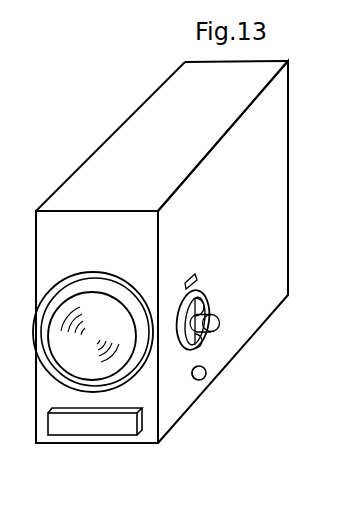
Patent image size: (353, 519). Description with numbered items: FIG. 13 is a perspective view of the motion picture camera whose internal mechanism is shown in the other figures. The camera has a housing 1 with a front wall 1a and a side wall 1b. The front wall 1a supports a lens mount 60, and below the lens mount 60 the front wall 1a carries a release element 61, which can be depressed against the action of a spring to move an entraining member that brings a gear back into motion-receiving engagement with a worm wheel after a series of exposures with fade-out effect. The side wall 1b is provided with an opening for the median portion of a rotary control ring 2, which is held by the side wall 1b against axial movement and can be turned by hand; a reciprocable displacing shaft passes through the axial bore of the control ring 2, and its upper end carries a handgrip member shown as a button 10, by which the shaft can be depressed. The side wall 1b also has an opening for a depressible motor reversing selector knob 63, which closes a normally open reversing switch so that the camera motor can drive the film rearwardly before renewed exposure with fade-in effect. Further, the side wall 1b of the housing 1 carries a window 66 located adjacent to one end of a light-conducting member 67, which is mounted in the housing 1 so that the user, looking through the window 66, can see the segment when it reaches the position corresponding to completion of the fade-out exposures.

The housing 1 is at (183, 273).
The front wall 1a is at (148, 430).
The side wall 1b is at (282, 228).
The rotary control ring 2 is at (203, 343).
The button 10 is at (203, 322).
The lens mount 60 is at (62, 372).
The release element 61 is at (95, 425).
The motor reversing selector knob 63 is at (206, 378).
The window 66 is at (196, 286).
The light-conducting member 67 is at (189, 282).